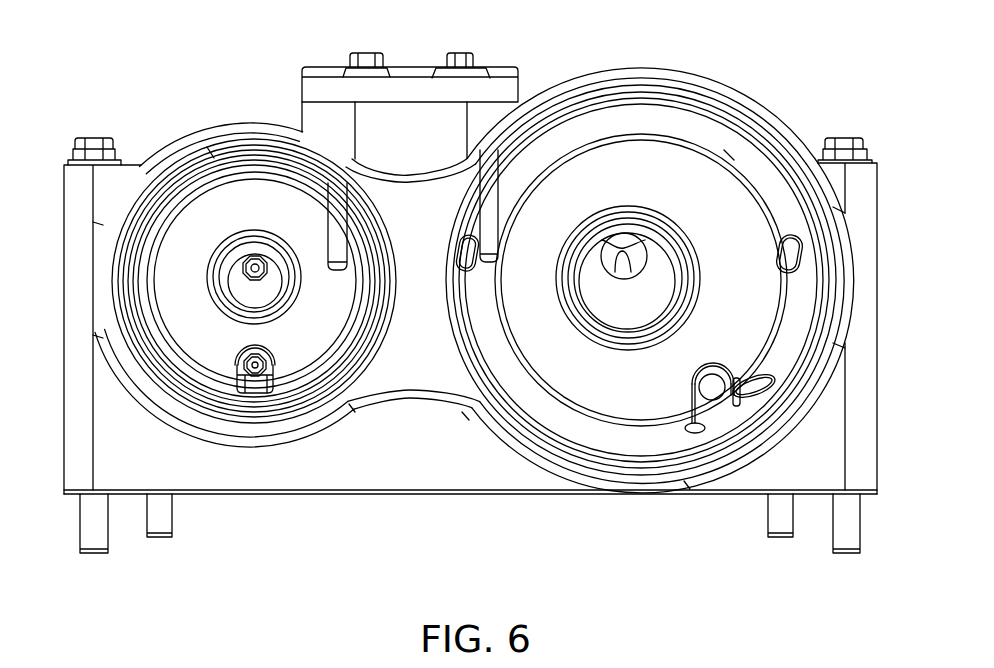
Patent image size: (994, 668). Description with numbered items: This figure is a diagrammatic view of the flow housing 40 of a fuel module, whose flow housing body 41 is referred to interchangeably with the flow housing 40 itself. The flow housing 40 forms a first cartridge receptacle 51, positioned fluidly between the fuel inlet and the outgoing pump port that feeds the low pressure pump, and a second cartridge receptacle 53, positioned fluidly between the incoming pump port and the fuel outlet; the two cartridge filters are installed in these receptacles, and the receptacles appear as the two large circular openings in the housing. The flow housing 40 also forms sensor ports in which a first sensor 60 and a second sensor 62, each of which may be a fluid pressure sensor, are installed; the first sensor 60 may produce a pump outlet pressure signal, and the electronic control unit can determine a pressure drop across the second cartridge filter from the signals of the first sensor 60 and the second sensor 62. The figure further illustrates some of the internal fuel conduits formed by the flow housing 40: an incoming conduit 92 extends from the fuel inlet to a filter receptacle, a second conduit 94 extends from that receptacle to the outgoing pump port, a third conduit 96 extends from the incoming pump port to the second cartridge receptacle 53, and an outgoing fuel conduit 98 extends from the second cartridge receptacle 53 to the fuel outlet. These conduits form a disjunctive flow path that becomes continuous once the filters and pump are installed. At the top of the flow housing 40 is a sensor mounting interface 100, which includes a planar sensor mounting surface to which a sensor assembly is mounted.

The flow housing 40 is at (758, 77).
The flow housing body 41 is at (878, 183).
The first cartridge receptacle 51 is at (742, 150).
The second cartridge receptacle 53 is at (202, 158).
The first sensor 60 is at (257, 255).
The second sensor 62 is at (240, 366).
The incoming conduit 92 is at (694, 384).
The second conduit 94 is at (634, 269).
The third conduit 96 is at (264, 371).
The outgoing fuel conduit 98 is at (236, 284).
The sensor mounting interface 100 is at (301, 100).